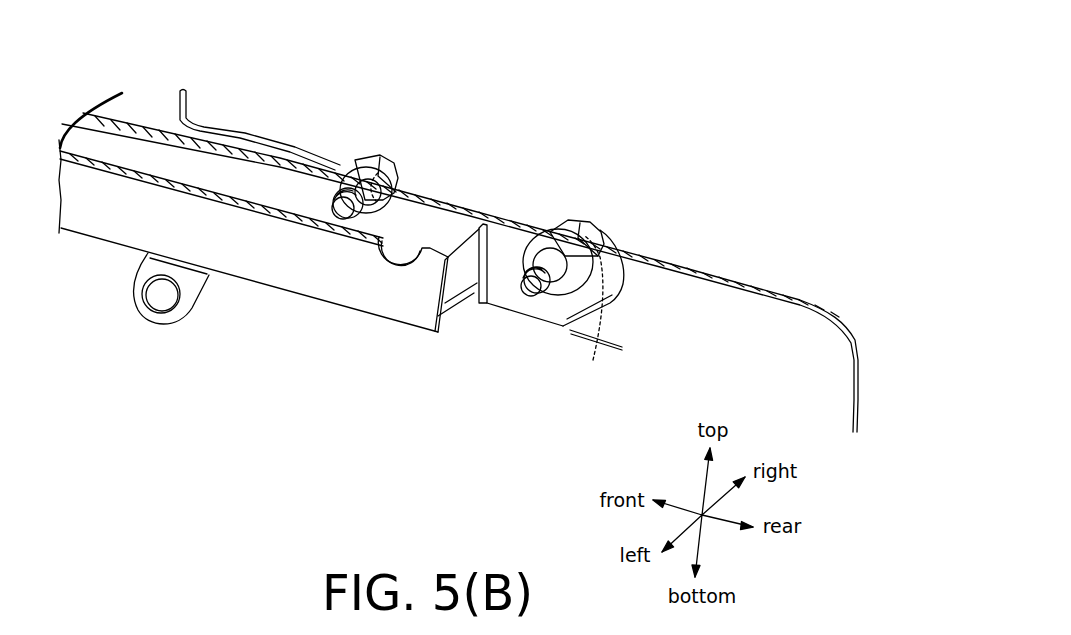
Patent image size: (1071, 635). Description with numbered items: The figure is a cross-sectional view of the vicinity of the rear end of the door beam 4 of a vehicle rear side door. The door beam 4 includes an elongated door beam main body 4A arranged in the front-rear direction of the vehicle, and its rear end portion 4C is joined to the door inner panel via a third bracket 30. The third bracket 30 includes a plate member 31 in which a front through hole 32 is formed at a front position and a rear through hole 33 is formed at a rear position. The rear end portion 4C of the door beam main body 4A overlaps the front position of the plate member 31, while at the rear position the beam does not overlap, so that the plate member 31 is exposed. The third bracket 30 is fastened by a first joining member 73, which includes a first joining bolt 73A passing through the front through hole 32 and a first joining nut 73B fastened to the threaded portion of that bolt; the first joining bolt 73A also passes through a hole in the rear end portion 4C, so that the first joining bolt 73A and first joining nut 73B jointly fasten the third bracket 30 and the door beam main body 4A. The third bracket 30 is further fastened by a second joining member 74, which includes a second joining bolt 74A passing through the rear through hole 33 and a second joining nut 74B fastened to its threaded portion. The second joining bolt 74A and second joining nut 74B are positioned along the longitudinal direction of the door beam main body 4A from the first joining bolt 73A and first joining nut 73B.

The door beam 4 is at (230, 292).
The door beam main body 4A is at (102, 192).
The rear end portion 4C is at (397, 290).
The third bracket 30 is at (522, 222).
The plate member 31 is at (498, 297).
The front through hole 32 is at (380, 174).
The rear through hole 33 is at (593, 360).
The first joining member 73 is at (378, 152).
The first joining bolt 73A is at (340, 212).
The first joining nut 73B is at (357, 178).
The second joining member 74 is at (603, 220).
The second joining bolt 74A is at (530, 290).
The second joining nut 74B is at (573, 240).